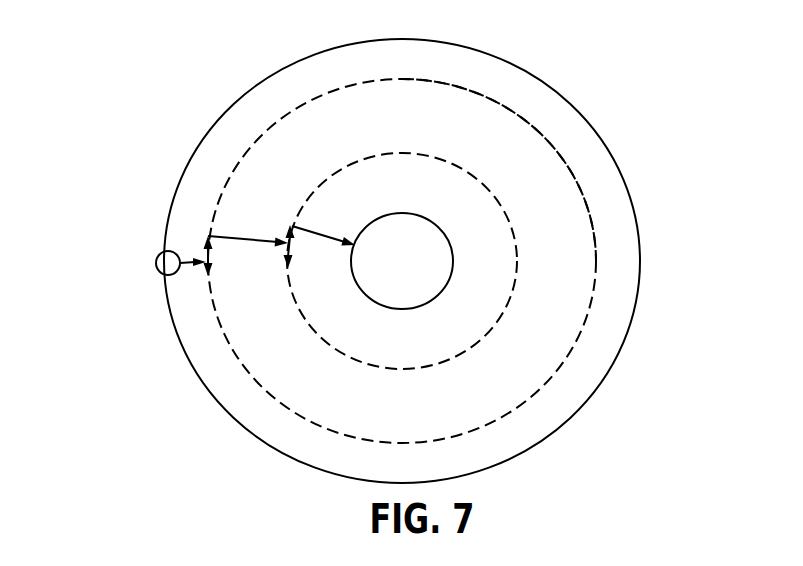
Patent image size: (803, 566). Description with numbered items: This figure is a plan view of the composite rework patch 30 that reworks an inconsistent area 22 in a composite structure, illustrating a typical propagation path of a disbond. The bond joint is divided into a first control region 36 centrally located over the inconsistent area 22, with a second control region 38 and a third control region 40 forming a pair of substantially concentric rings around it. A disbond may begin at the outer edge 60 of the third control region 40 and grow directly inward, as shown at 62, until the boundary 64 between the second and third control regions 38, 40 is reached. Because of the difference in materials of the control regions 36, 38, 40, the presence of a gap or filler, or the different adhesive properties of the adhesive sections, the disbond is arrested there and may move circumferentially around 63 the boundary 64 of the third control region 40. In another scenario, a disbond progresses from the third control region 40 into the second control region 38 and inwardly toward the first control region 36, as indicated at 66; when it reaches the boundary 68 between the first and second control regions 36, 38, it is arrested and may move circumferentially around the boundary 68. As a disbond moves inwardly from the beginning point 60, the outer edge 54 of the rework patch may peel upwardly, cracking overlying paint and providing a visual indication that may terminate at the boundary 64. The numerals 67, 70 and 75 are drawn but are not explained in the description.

The inconsistent area 22 is at (424, 256).
The composite rework patch 30 is at (613, 102).
The first control region 36 is at (385, 176).
The second control region 38 is at (257, 347).
The third control region 40 is at (588, 358).
The outer edge of the rework patch 54 is at (139, 286).
The outer edge of the third control region 60 is at (168, 263).
The inward disbond growth 62 is at (168, 251).
The circumferential disbond movement 63 is at (207, 275).
The boundary between control regions 64 is at (562, 389).
The inward disbond progression 66 is at (228, 236).
The inner dashed boundary 67 is at (449, 374).
The boundary between first and second control regions 68 is at (287, 257).
The flow direction arrow 70 is at (320, 232).
The inflow path 75 is at (346, 298).